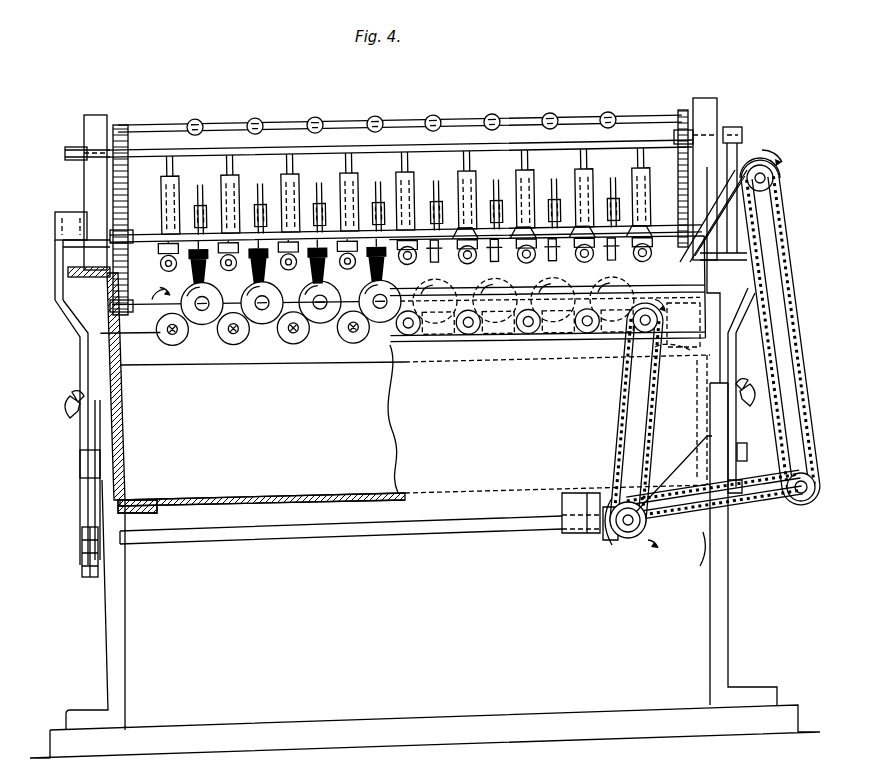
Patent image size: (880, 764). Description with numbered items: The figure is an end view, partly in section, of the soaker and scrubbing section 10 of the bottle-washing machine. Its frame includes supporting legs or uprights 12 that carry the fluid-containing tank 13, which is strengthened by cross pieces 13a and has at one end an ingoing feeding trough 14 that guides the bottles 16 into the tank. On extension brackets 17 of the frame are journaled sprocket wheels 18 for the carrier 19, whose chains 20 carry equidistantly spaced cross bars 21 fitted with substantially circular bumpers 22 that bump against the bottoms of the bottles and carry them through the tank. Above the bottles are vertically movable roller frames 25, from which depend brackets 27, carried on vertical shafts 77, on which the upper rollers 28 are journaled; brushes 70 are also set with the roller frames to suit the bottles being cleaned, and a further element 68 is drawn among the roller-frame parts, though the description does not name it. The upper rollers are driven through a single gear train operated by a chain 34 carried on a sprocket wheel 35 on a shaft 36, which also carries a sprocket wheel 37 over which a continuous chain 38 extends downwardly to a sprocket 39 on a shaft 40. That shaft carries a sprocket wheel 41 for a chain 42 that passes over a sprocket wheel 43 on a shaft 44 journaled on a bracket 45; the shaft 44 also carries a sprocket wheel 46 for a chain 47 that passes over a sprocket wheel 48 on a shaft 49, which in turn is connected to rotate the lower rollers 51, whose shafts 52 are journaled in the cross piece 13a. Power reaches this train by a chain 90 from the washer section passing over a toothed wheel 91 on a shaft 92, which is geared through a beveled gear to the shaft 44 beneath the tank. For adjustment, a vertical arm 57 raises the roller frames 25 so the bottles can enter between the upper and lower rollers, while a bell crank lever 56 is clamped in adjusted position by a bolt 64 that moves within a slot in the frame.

The soaker and scrubbing section 10 is at (400, 120).
The supporting legs or uprights 12 is at (125, 635).
The tank 13 is at (395, 395).
The cross pieces 13a is at (150, 367).
The ingoing feeding trough 14 is at (425, 243).
The bottles or like containers 16 is at (204, 326).
The extension brackets 17 is at (95, 117).
The sprocket wheels 18 is at (683, 110).
The carrier 19 is at (400, 108).
The chains 20 is at (126, 125).
The cross bars 21 is at (462, 120).
The bumpers 22 is at (610, 120).
The roller frames 25 is at (66, 222).
The brackets 27 is at (168, 257).
The upper rollers 28 is at (156, 295).
The chain 34 is at (775, 180).
The sprocket wheel 35 is at (779, 147).
The shaft 36 is at (762, 162).
The sprocket wheel 37 is at (786, 156).
The continuous chain 38 is at (790, 235).
The sprocket 39 is at (713, 502).
The shaft 40 is at (801, 506).
The sprocket wheel 41 is at (808, 515).
The chain 42 is at (705, 548).
The sprocket wheel 43 is at (716, 526).
The shaft 44 is at (630, 545).
The bracket 45 is at (688, 455).
The sprocket wheel 46 is at (620, 540).
The chain 47 is at (616, 395).
The sprocket wheel 48 is at (665, 314).
The shaft 49 is at (655, 347).
The lower rollers 51 is at (222, 346).
The shafts 52 is at (522, 338).
The bell crank lever 56 is at (100, 455).
The vertical arm 57 is at (735, 320).
The bolt 64 is at (70, 412).
The rod 68 is at (378, 200).
The brushes 70 is at (215, 244).
The vertical shafts 77 is at (339, 170).
The chain 90 is at (87, 522).
The toothed wheel 91 is at (598, 545).
The shaft 92 is at (411, 532).